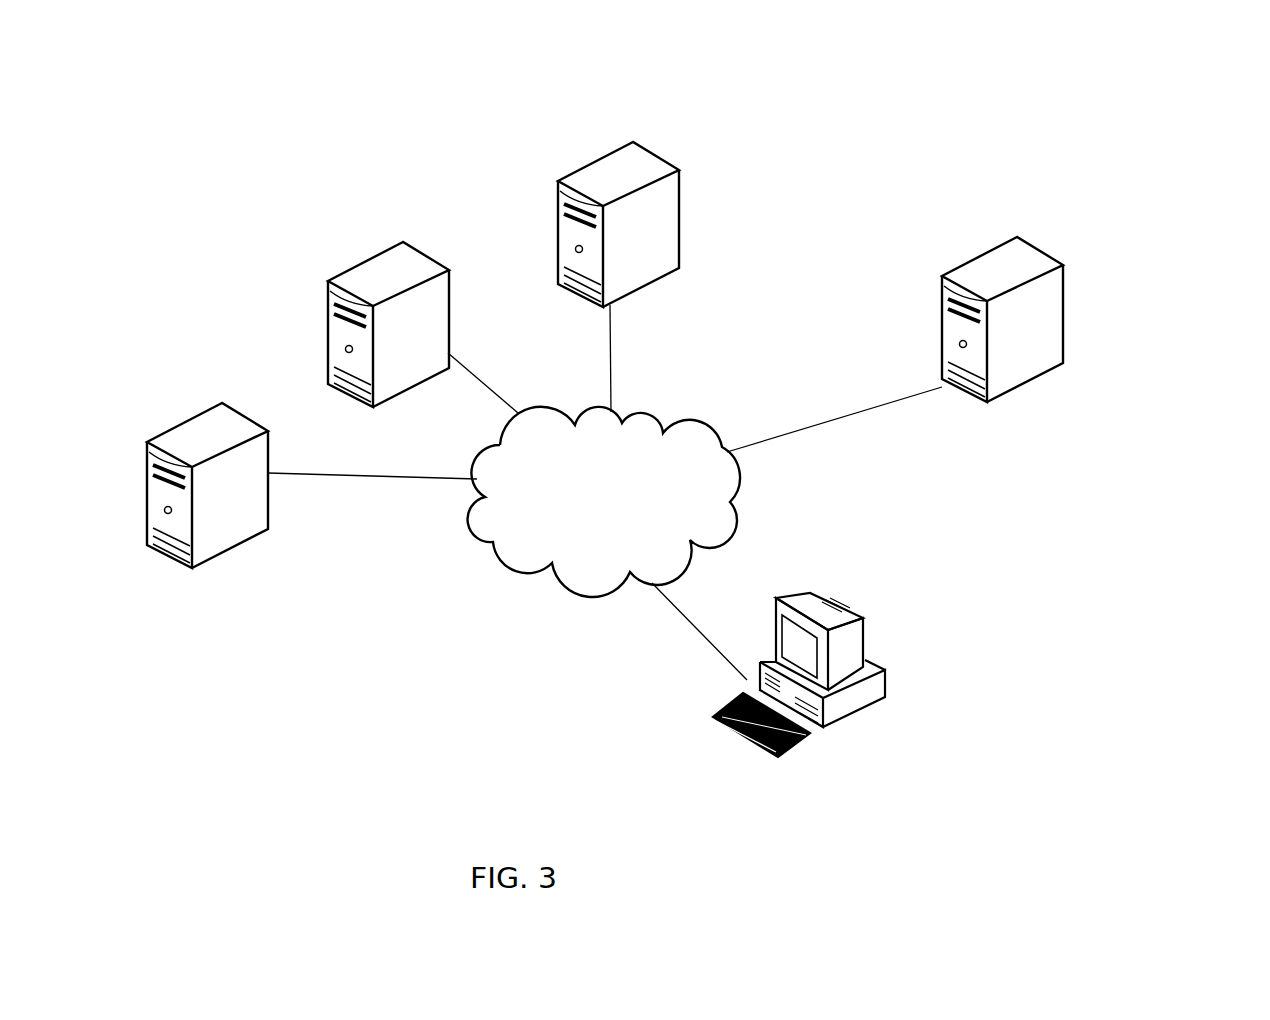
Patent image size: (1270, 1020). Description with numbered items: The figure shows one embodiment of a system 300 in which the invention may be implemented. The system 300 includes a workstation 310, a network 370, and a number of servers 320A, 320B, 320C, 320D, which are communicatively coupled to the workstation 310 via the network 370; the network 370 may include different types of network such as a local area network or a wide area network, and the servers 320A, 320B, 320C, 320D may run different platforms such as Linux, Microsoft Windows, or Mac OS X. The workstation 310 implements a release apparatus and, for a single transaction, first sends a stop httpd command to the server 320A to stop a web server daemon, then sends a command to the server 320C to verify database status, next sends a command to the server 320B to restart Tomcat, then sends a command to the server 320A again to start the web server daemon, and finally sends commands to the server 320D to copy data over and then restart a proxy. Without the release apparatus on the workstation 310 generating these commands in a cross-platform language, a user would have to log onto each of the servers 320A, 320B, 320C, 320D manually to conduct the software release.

The system 300 is at (883, 80).
The workstation 310 is at (798, 713).
The server 320A is at (205, 513).
The server 320B is at (313, 319).
The server 320C is at (717, 224).
The server 320D is at (1098, 319).
The network 370 is at (604, 502).